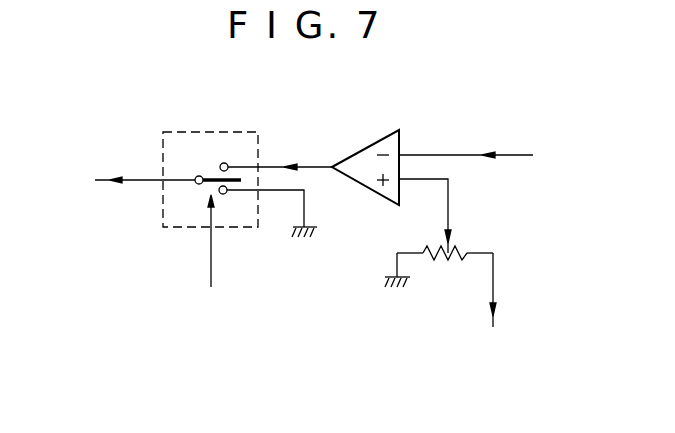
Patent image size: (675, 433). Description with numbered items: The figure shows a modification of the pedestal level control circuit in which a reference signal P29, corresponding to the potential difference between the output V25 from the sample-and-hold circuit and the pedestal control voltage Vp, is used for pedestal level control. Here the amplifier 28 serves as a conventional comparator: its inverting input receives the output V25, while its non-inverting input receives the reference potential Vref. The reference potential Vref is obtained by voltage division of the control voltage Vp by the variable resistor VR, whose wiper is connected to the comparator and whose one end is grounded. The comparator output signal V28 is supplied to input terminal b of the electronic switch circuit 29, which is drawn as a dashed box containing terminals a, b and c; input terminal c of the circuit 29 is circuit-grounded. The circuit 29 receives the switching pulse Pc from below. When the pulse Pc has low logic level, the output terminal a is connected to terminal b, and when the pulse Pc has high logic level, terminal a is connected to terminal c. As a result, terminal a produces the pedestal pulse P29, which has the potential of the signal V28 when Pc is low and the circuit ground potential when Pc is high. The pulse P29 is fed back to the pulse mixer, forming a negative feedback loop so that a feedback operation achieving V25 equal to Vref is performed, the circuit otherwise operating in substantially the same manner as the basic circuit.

The electronic switch circuit 29 is at (192, 131).
The amplifier 28 is at (372, 150).
The pedestal pulse P29 is at (122, 183).
The switching pulse Pc is at (211, 254).
The output signal V28 is at (310, 165).
The output from S/H circuit V25 is at (484, 156).
The reference potential Vref is at (448, 210).
The variable resistor VR is at (437, 262).
The pedestal control voltage Vp is at (496, 308).